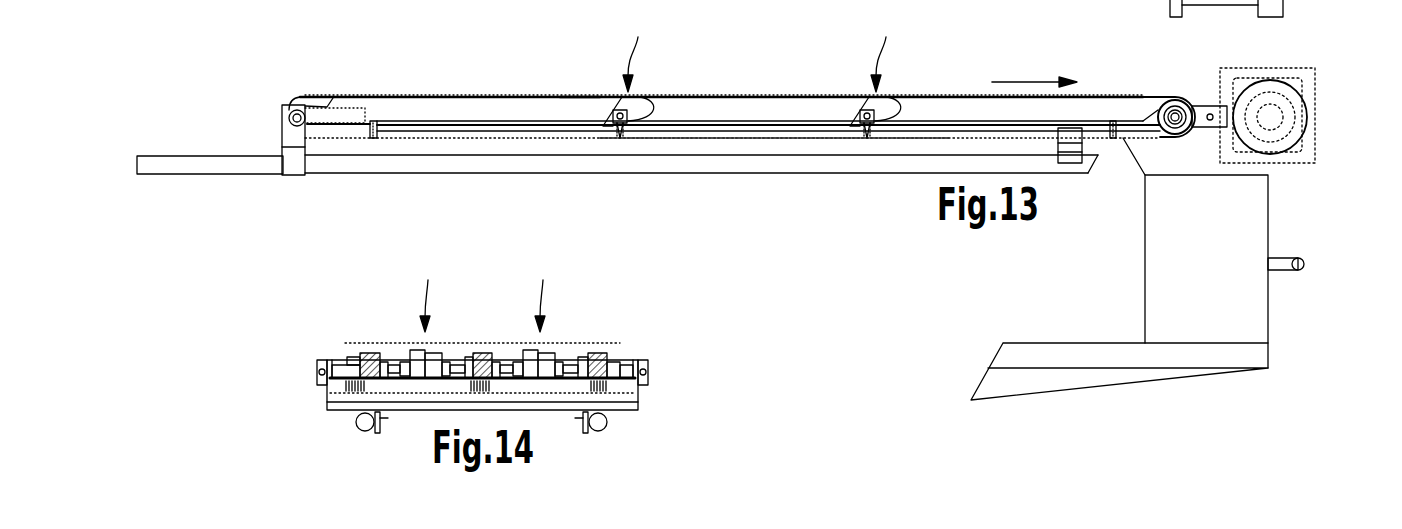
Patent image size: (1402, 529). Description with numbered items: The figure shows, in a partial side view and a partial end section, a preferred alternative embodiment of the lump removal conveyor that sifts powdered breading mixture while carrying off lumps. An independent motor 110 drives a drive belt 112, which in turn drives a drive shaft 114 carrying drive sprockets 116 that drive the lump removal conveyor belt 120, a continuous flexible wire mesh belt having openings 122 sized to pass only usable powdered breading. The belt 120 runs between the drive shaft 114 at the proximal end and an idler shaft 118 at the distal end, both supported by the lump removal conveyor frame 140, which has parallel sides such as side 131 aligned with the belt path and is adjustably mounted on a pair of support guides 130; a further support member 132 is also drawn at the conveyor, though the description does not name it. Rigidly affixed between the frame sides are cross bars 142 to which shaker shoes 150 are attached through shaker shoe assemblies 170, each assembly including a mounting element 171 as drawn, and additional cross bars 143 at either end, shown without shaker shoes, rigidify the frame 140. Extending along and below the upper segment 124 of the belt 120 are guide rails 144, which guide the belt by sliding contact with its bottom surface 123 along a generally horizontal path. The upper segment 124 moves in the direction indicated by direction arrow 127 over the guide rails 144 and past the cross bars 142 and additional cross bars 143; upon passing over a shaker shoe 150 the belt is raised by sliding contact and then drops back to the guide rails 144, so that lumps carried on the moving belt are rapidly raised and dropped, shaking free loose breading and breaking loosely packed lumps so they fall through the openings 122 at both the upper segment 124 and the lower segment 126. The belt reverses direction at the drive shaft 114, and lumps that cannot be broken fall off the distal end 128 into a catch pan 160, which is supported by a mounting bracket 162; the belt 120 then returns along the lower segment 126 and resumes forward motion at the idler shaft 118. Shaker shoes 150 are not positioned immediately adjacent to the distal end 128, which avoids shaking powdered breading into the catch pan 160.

In FIG. 13, the motor 110 is at (1302, 123).
In FIG. 13, the drive belt 112 is at (1225, 6).
In FIG. 14, the drive shaft 114 is at (340, 351).
In FIG. 14, the drive sprockets 116 is at (575, 366).
In FIG. 13, the idler shaft 118 is at (281, 133).
In FIG. 13, the lump removal conveyor belt 120 is at (545, 97).
In FIG. 14, the lump removal conveyor belt 120 is at (375, 343).
In FIG. 13, the openings 122 is at (723, 97).
In FIG. 13, the bottom surface 123 is at (581, 99).
In FIG. 13, the upper segment 124 is at (783, 110).
In FIG. 13, the lower segment 126 is at (775, 138).
In FIG. 13, the direction arrow 127 is at (1025, 79).
In FIG. 13, the distal end 128 is at (1181, 100).
In FIG. 13, the support guides 130 is at (737, 167).
In FIG. 14, the support guides 130 is at (358, 424).
In FIG. 13, the side 131 is at (418, 0).
In FIG. 13, the support arm 132 is at (210, 176).
In FIG. 14, the support arm 132 is at (610, 418).
In FIG. 13, the lump removal conveyor frame 140 is at (972, 0).
In FIG. 13, the cross bars 142 is at (620, 138).
In FIG. 14, the cross bars 142 is at (413, 383).
In FIG. 13, the additional cross bars 143 is at (373, 138).
In FIG. 13, the guide rails 144 is at (783, 107).
In FIG. 14, the guide rails 144 is at (364, 353).
In FIG. 13, the shaker shoes 150 is at (608, 108).
In FIG. 14, the shaker shoes 150 is at (410, 351).
In FIG. 13, the catch pan 160 is at (1240, 217).
In FIG. 13, the mounting bracket 162 is at (1088, 380).
In FIG. 13, the shaker shoe assemblies 170 is at (762, 53).
In FIG. 14, the shaker shoe assemblies 170 is at (488, 292).
In FIG. 13, the clamp tab 171 is at (634, 117).
In FIG. 14, the clamp tab 171 is at (443, 361).